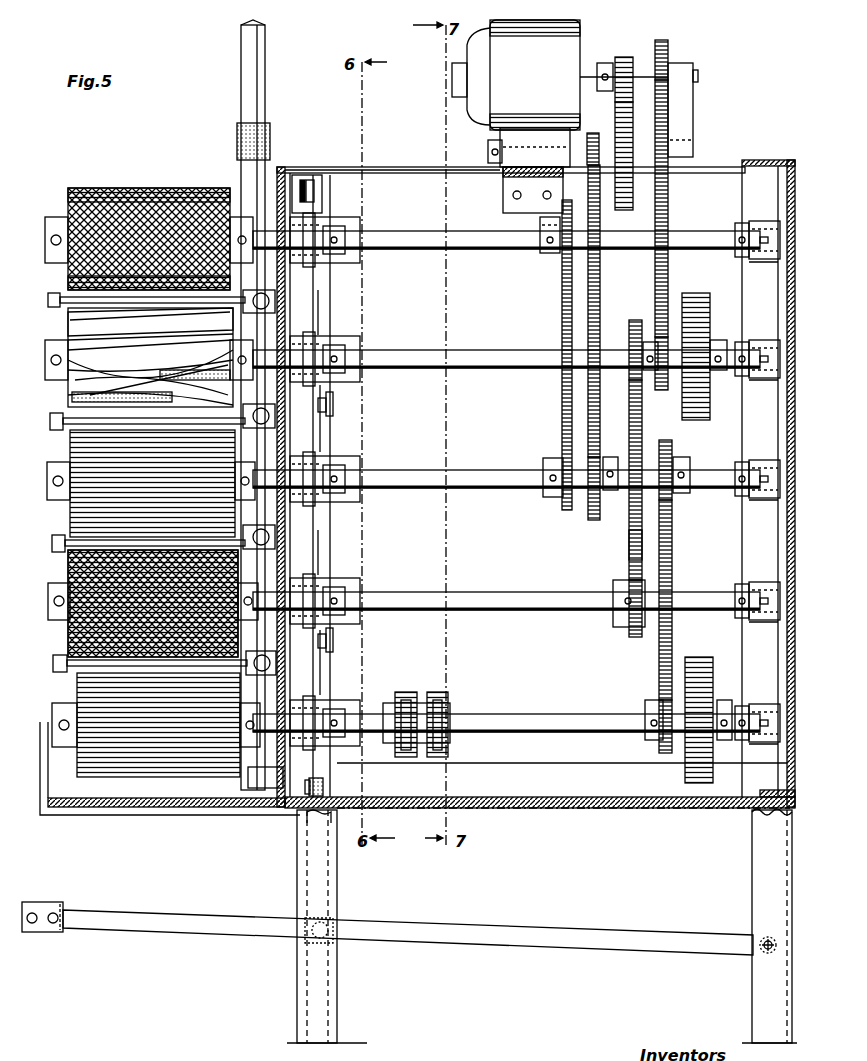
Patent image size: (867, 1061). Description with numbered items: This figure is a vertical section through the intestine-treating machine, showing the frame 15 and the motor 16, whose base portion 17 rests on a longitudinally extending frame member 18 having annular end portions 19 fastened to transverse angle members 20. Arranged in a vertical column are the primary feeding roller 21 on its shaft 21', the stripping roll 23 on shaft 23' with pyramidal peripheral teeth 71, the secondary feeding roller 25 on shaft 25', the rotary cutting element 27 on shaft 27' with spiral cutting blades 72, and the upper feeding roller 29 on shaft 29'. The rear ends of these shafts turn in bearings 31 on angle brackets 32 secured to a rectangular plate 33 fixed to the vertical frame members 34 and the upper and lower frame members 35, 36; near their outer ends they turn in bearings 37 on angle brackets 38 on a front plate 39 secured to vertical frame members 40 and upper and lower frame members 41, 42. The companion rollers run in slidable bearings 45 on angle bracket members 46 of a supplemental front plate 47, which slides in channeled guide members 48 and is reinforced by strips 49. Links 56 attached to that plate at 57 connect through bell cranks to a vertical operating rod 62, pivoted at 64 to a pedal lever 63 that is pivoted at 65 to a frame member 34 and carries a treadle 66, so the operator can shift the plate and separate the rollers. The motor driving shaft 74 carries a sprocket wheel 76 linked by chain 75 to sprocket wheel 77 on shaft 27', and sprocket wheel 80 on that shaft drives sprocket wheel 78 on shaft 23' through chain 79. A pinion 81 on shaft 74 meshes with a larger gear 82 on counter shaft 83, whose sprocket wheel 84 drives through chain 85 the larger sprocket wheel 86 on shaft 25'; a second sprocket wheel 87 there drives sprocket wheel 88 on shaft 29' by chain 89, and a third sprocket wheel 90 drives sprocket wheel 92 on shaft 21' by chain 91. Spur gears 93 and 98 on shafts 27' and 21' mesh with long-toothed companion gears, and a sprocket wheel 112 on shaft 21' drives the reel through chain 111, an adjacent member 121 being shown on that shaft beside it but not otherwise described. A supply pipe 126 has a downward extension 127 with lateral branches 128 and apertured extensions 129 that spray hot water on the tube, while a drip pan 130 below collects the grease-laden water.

The frame 15 is at (393, 170).
The motor 16 is at (560, 75).
The base portion 17 is at (535, 147).
The longitudinally extending frame member 18 is at (505, 172).
The annular end portions 19 is at (508, 196).
The transverse angle members 20 is at (335, 170).
The primary feeding roller 21 is at (149, 725).
The shaft 21' is at (506, 708).
The stripping roll 23 is at (145, 603).
The shaft 23' is at (506, 616).
The secondary feeding roller 25 is at (142, 483).
The shaft 25' is at (506, 497).
The rotary cutting element 27 is at (130, 357).
The drive shaft 27' is at (506, 378).
The feeding roller 29 is at (149, 228).
The driving shaft 29' is at (506, 254).
The bearings 31 is at (742, 250).
The angle brackets 32 is at (768, 252).
The rectangular plate 33 is at (787, 310).
The vertical frame members 34 is at (750, 543).
The horizontal upper frame member 35 is at (755, 162).
The lower frame member 36 is at (778, 792).
The bearings 37 is at (315, 215).
The angle brackets 38 is at (300, 313).
The front plate 39 is at (300, 552).
The vertical frame members 40 is at (300, 850).
The upper frame member 41 is at (291, 178).
The lower frame member 42 is at (297, 808).
The bearings 45 is at (350, 222).
The angle bracket members 46 is at (345, 258).
The supplemental front plate 47 is at (320, 420).
The channeled guide members 48 is at (345, 182).
The strips 49 is at (303, 183).
The links 56 is at (326, 408).
The attachment point 57 is at (333, 398).
The vertical reciprocatory operating rod 62 is at (337, 872).
The pedal lever 63 is at (460, 945).
The pivotal attachment 64 is at (340, 905).
The pivot 65 is at (762, 950).
The treadle member 66 is at (50, 903).
The pyramidal peripheral teeth 71 is at (632, 548).
The cutting blades 72 is at (150, 357).
The driving shaft 74 is at (693, 76).
The chain 75 is at (668, 268).
The sprocket wheel 76 is at (668, 50).
The sprocket wheel 77 is at (665, 392).
The sprocket wheel 78 is at (620, 628).
The chain 79 is at (635, 480).
The sprocket wheel 80 is at (633, 335).
The pinion 81 is at (624, 58).
The larger gear 82 is at (618, 185).
The counter shaft 83 is at (488, 150).
The sprocket wheel 84 is at (596, 135).
The chain 85 is at (600, 273).
The sprocket wheel 86 is at (590, 505).
The second sprocket wheel 87 is at (553, 500).
The sprocket wheel 88 is at (548, 255).
The chain 89 is at (563, 390).
The third sprocket wheel 90 is at (672, 460).
The chain 91 is at (672, 535).
The sprocket wheel 92 is at (662, 742).
The spur gear 93 is at (705, 300).
The spur gear 98 is at (700, 658).
The chain 111 is at (438, 692).
The sprocket wheel 112 is at (448, 705).
The clutch member 121 is at (405, 692).
The supply pipe 126 is at (265, 80).
The downward extension 127 is at (247, 172).
The laterally extending branches 128 is at (245, 300).
The apertured extensions 129 is at (55, 305).
The drip pan 130 is at (135, 805).